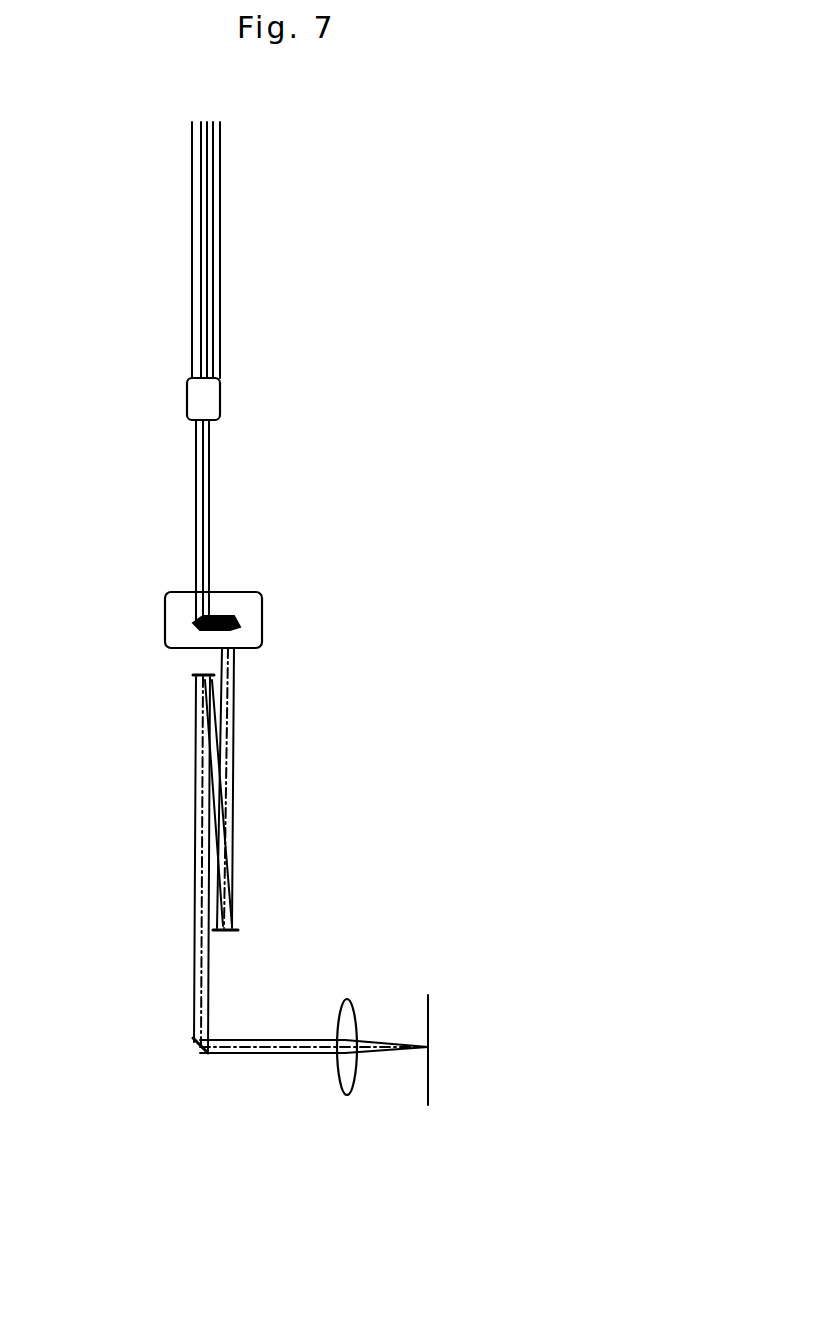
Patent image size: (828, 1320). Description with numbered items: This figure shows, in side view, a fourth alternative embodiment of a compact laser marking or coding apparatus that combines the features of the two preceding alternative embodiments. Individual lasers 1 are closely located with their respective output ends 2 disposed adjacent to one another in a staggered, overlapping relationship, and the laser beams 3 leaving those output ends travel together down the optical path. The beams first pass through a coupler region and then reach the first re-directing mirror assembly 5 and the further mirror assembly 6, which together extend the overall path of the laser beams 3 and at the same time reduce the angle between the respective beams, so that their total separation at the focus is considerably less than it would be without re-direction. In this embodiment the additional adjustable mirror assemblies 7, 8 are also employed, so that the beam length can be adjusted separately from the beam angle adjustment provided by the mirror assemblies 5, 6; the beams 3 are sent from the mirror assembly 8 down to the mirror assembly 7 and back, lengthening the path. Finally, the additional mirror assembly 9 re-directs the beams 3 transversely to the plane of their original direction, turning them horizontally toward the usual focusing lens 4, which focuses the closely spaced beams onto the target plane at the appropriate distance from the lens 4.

The laser 1 is at (220, 247).
The output end 2 is at (220, 398).
The laser beam 3 is at (209, 505).
The focusing lens 4 is at (353, 1085).
The first re-directing mirror assembly 5 is at (197, 623).
The mirror assembly 6 is at (200, 621).
The adjustable mirror assembly 7 is at (236, 928).
The adjustable mirror assembly 8 is at (196, 676).
The additional mirror assembly 9 is at (200, 1047).